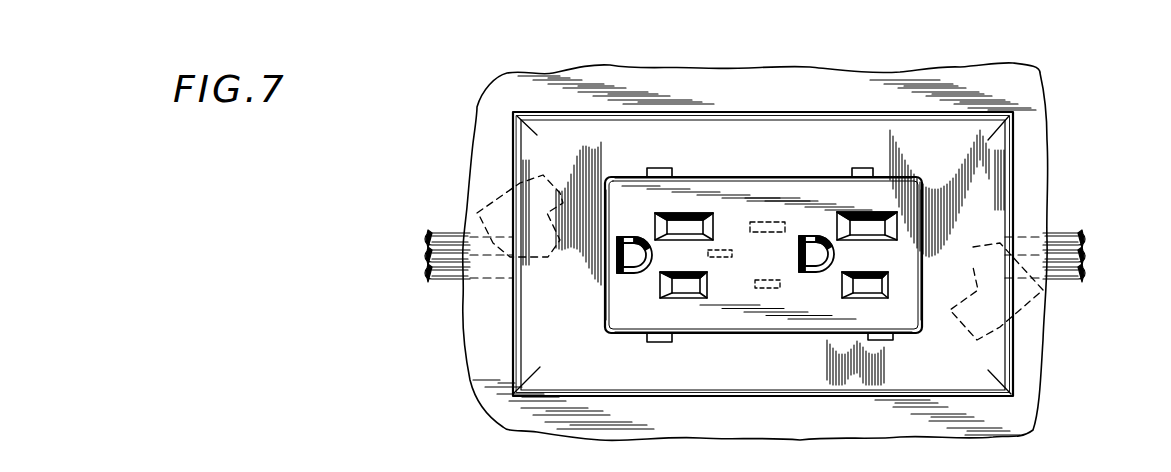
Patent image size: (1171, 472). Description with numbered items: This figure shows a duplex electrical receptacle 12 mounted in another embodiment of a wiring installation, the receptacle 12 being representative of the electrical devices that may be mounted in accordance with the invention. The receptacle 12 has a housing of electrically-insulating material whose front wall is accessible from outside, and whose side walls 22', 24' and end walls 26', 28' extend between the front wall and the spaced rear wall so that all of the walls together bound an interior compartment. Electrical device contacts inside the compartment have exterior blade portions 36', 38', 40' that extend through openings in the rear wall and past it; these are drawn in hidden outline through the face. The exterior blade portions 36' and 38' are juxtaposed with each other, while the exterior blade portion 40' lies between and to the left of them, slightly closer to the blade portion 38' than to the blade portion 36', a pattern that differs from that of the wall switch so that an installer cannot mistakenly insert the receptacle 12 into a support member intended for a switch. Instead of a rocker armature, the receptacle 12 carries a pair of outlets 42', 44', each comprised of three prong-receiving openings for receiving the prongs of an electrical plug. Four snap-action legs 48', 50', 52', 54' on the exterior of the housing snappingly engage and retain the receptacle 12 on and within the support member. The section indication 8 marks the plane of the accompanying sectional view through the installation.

The section line 8- 8 is at (413, 255).
The duplex electrical receptacle 12 is at (596, 307).
The side wall 22' is at (763, 359).
The side wall 24' is at (763, 156).
The end wall 26' is at (570, 255).
The end wall 28' is at (944, 255).
The exterior blade portion 36' is at (782, 296).
The exterior blade portion 38' is at (774, 190).
The exterior blade portion 40' is at (730, 267).
The outlet 42' is at (623, 307).
The outlet 44' is at (823, 331).
The snap-action leg 48' is at (675, 356).
The snap-action leg 50' is at (904, 351).
The snap-action leg 52' is at (851, 155).
The snap-action leg 54' is at (648, 156).